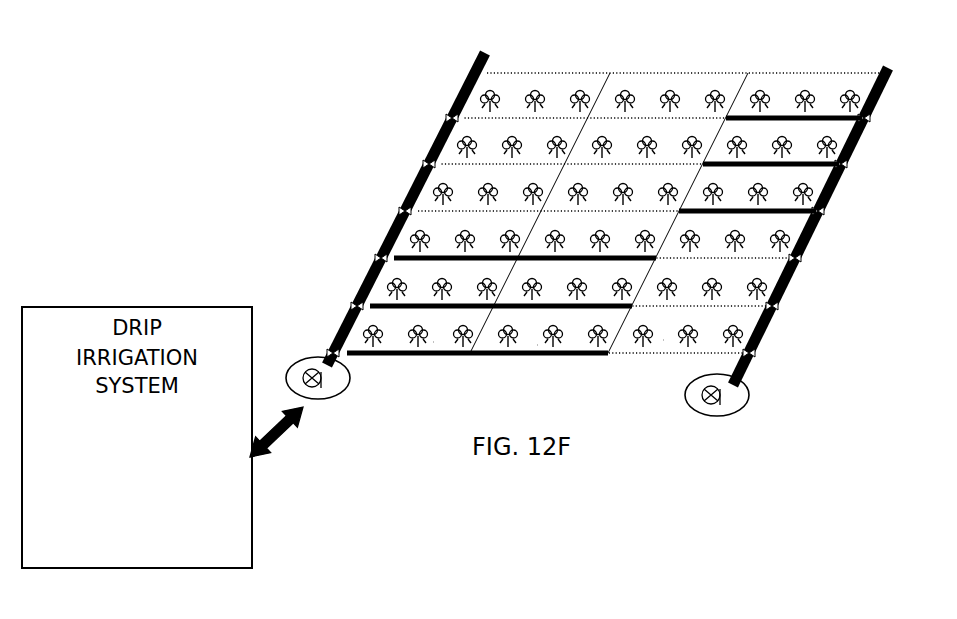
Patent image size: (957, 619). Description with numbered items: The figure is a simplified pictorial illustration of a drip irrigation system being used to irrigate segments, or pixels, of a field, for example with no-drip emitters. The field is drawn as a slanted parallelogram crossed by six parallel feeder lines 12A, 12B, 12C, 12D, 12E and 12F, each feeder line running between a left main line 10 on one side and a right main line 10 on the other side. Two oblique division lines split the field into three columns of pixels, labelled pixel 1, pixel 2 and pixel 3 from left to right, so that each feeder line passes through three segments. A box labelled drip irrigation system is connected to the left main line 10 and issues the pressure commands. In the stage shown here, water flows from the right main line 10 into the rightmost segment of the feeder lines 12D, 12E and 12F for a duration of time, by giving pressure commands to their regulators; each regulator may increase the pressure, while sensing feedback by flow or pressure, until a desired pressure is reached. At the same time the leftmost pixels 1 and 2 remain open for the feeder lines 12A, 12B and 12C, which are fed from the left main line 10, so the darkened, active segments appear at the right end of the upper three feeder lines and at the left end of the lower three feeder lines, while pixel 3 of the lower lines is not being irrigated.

The main line 10 is at (486, 53).
The feeder line 12A is at (382, 323).
The feeder line 12B is at (387, 282).
The feeder line 12C is at (418, 225).
The feeder line 12D is at (443, 177).
The feeder line 12E is at (473, 130).
The feeder line 12F is at (490, 81).
The pixel 1 is at (433, 342).
The pixel 2 is at (537, 345).
The field section 3 is at (663, 340).